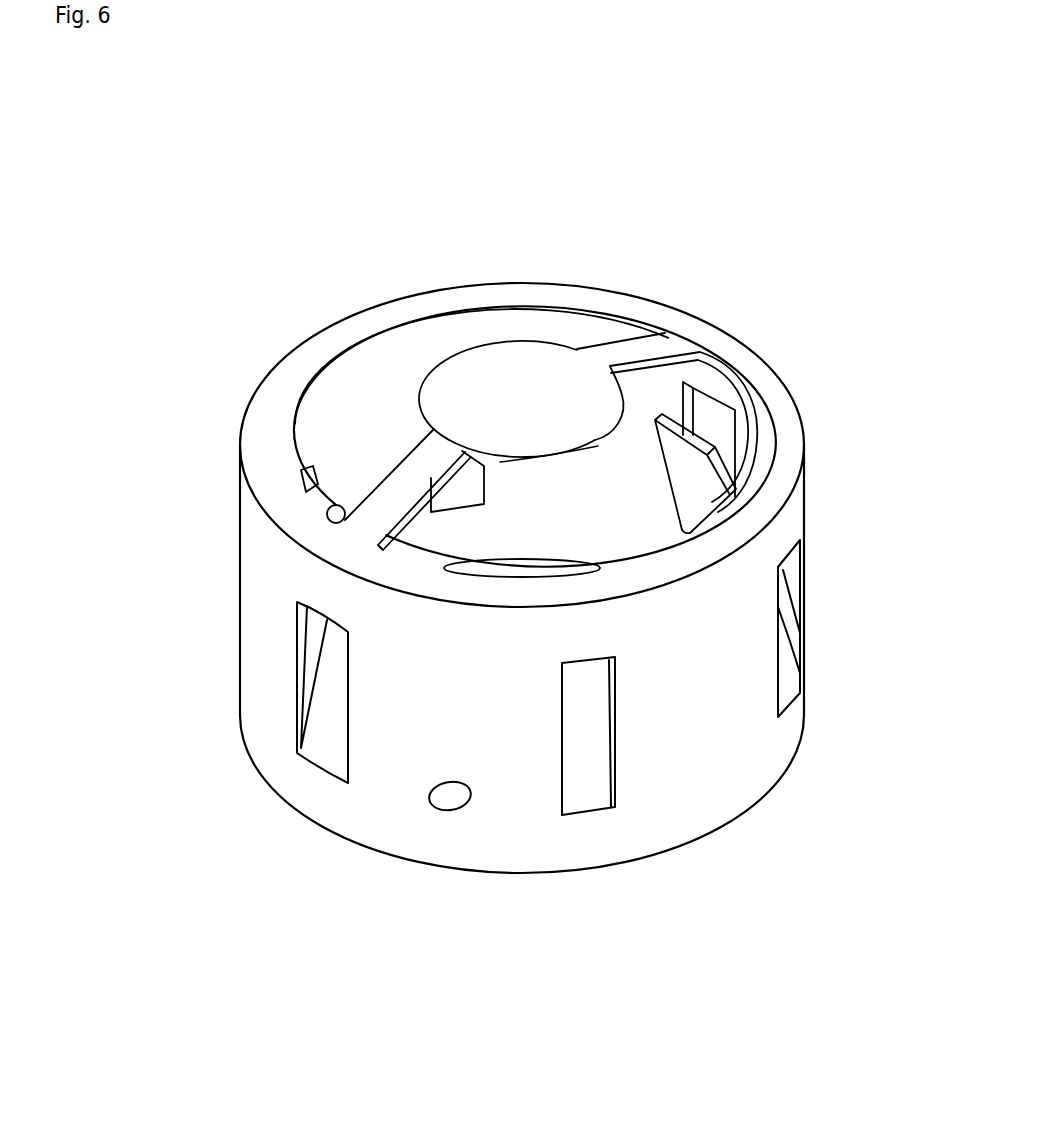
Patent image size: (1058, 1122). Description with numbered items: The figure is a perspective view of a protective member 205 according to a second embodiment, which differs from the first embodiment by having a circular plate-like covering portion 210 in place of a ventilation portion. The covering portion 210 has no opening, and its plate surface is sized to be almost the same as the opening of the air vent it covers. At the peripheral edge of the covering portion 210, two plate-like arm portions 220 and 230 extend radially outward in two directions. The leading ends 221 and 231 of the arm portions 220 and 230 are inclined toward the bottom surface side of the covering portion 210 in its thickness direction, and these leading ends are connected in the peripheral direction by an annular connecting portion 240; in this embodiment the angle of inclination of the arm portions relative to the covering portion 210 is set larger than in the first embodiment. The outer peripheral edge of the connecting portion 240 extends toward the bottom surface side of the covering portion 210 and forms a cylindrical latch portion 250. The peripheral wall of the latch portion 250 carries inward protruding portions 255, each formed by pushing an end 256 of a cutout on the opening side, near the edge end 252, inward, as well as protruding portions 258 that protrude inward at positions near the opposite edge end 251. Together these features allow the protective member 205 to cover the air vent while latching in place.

The protective member 205 is at (741, 180).
The covering portion 210 is at (522, 388).
The arm portion 220 is at (407, 472).
The leading end 221 is at (334, 553).
The arm portion 230 is at (642, 347).
The leading end 231 is at (716, 327).
The connecting portion 240 is at (763, 395).
The latch portion 250 is at (253, 538).
The edge end 251 is at (826, 721).
The edge end 252 is at (826, 490).
The inward protruding portion 255 is at (312, 493).
The end of cutout 256 is at (665, 395).
The protruding portion 258 is at (407, 558).